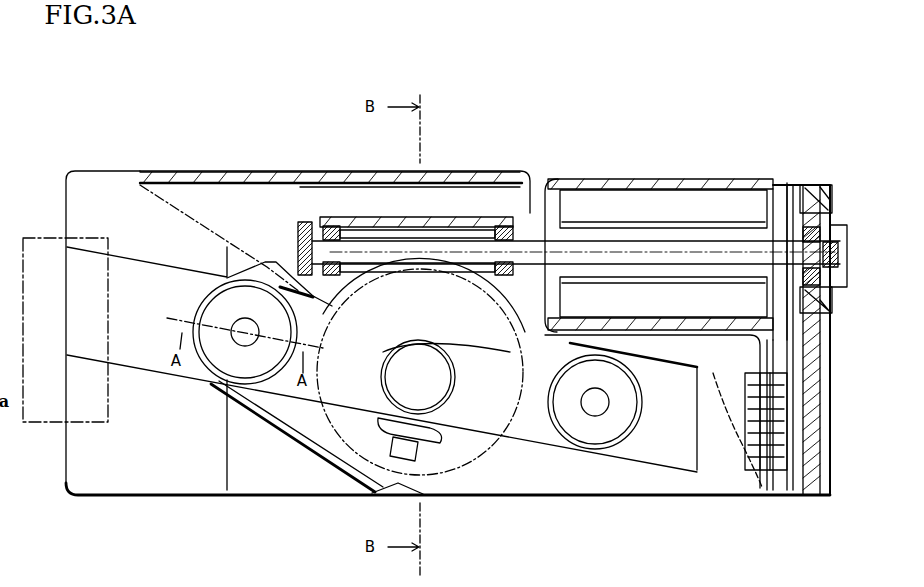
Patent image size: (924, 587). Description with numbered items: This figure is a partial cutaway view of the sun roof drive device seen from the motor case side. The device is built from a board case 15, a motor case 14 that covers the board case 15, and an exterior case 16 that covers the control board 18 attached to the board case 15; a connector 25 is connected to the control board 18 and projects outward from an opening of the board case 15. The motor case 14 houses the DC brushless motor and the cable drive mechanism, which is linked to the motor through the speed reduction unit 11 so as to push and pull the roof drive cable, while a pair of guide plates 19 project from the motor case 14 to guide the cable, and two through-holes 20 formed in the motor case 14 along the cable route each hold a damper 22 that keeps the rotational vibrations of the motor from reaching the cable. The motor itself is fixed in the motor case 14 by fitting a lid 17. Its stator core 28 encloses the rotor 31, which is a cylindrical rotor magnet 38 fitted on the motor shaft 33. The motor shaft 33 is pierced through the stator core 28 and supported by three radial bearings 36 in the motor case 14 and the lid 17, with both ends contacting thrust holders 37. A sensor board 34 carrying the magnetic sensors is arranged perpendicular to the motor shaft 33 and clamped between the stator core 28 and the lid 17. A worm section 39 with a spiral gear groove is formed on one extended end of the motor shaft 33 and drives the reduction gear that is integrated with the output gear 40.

The speed reduction unit 11 is at (385, 235).
The motor case 14 is at (703, 487).
The board case 15 is at (228, 186).
The exterior case 16 is at (120, 186).
The lid 17 is at (846, 234).
The control board 18 is at (200, 195).
The guide plates 19 is at (445, 452).
The through-holes 20 is at (216, 380).
The damper 22 is at (247, 360).
The connector 25 is at (37, 236).
The stator core 28 is at (612, 195).
The rotor 31 is at (760, 92).
The motor shaft 33 is at (678, 245).
The sensor board 34 is at (787, 420).
The radial bearings 36 is at (330, 226).
The thrust holders 37 is at (300, 223).
The rotor magnet 38 is at (718, 238).
The worm section 39 is at (445, 230).
The output gear 40 is at (439, 382).